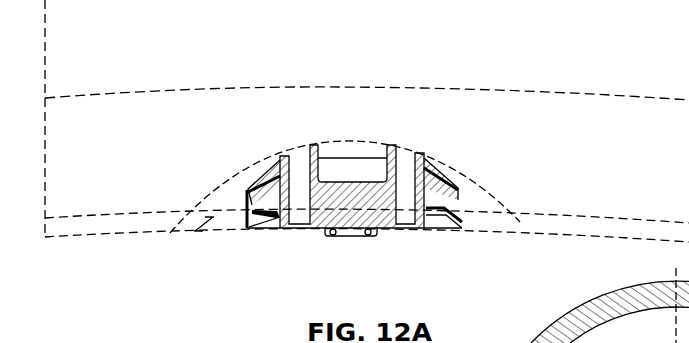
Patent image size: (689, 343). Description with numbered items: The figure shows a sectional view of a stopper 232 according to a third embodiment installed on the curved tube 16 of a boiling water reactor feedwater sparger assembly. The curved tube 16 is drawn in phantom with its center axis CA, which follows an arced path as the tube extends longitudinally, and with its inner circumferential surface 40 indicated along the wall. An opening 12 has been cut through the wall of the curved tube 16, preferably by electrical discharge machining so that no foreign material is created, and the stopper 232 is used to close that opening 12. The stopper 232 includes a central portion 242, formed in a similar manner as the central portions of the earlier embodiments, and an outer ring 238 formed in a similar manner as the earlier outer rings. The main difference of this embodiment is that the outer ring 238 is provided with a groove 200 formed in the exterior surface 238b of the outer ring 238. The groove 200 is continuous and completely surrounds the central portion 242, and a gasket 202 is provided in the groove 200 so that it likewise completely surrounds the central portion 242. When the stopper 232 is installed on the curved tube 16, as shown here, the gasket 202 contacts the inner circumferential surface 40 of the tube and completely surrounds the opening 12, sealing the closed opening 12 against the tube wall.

The center axis CA is at (622, 101).
The inner circumferential surface 40 is at (110, 215).
The curved tube 16 is at (123, 247).
The gasket 202 is at (240, 207).
The outer ring 238 is at (240, 201).
The exterior surface 238b is at (238, 215).
The groove 200 is at (248, 190).
The opening 12 is at (263, 235).
The central portion 242 is at (343, 222).
The stopper 232 is at (406, 235).